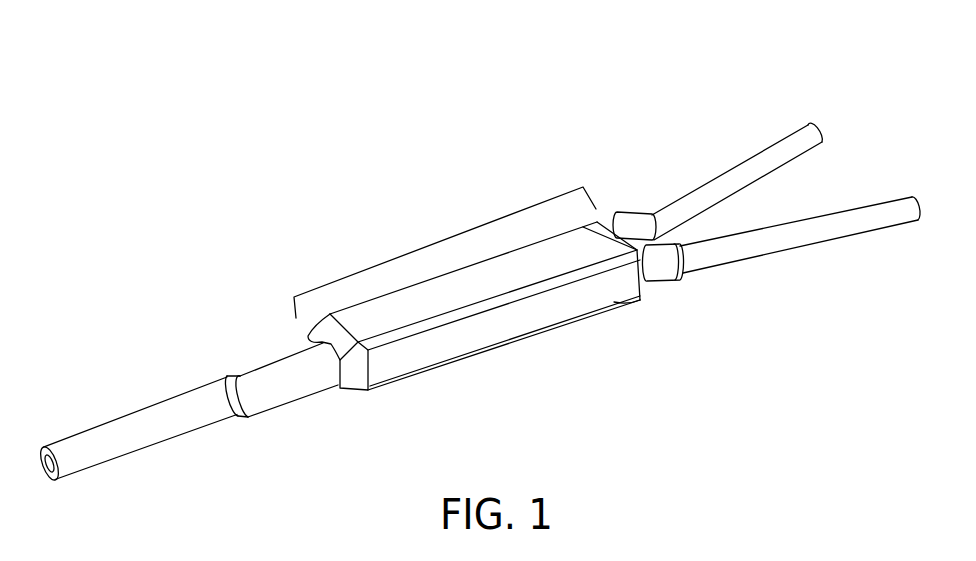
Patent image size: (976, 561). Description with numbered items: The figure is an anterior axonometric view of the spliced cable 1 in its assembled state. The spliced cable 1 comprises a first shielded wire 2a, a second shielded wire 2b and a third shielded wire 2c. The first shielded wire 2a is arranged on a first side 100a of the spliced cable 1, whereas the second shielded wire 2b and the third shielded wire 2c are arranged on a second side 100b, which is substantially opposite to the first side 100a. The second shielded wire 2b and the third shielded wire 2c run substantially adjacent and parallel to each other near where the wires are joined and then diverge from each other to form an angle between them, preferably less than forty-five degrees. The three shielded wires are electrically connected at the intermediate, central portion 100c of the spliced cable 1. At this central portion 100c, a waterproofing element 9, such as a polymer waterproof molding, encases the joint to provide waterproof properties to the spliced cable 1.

The spliced cable 1 is at (320, 142).
The first shielded wire 2a is at (153, 382).
The second shielded wire 2b is at (697, 162).
The third shielded wire 2c is at (793, 265).
The waterproofing element 9 is at (498, 332).
The first side 100a is at (198, 303).
The second side 100b is at (632, 172).
The central portion 100c is at (440, 242).